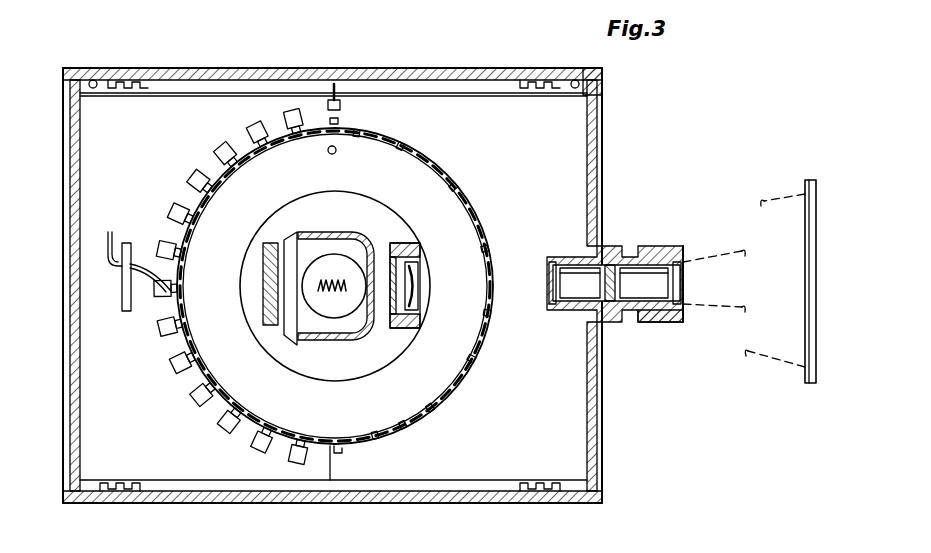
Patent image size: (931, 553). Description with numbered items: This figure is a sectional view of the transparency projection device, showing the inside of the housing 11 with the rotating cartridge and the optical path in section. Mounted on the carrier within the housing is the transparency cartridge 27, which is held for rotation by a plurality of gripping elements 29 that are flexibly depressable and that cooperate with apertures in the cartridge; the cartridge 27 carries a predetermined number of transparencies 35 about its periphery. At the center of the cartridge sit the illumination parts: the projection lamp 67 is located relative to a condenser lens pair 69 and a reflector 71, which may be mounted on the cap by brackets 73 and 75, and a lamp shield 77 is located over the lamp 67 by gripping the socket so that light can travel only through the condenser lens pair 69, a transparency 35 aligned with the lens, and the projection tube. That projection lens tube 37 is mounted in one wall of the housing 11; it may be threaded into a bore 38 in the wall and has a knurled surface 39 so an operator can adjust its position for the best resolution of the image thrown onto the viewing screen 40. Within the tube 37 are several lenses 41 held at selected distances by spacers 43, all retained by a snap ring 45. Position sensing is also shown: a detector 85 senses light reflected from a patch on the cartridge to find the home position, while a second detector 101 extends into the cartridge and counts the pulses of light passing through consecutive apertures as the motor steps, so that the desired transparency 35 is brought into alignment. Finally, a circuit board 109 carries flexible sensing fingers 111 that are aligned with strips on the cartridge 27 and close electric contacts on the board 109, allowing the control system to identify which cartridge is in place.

The housing 11 is at (628, 93).
The transparency cartridge 27 is at (483, 222).
The gripping elements 29 is at (405, 136).
The transparencies 35 is at (432, 410).
The projection lens tube 37 is at (553, 308).
The bore 38 is at (573, 262).
The knurled surface 39 is at (650, 255).
The viewing screen 40 is at (805, 372).
The lenses 41 is at (548, 287).
The spacers 43 is at (632, 262).
The snap ring 45 is at (662, 320).
The projection lamp 67 is at (332, 258).
The condenser lens pair 69 is at (418, 280).
The reflector 71 is at (292, 238).
The bracket 73 is at (385, 242).
The bracket 75 is at (263, 262).
The lamp shield 77 is at (320, 232).
The detector 85 is at (342, 104).
The detector 101 is at (327, 153).
The circuit board 109 is at (124, 306).
The flexible sensing fingers 111 is at (150, 255).